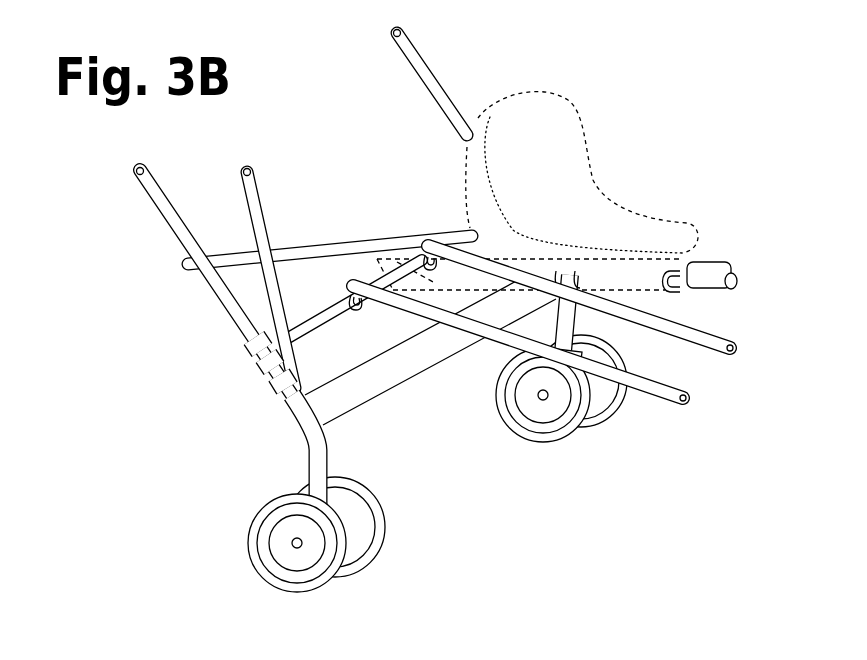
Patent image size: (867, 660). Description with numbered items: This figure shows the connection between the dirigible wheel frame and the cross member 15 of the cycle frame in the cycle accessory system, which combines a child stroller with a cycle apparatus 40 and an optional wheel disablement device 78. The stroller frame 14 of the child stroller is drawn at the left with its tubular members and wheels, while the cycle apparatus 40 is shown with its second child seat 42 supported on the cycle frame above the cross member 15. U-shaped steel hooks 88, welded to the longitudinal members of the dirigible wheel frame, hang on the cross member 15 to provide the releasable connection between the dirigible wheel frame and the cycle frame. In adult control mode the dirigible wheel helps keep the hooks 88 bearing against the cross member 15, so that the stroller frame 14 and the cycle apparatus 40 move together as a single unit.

The stroller frame 14 is at (198, 258).
The cross member 15 is at (328, 313).
The cycle apparatus 40 is at (720, 263).
The second child seat 42 is at (557, 130).
The wheel disablement device 78 is at (650, 392).
The U-shaped steel hooks 88 is at (357, 308).